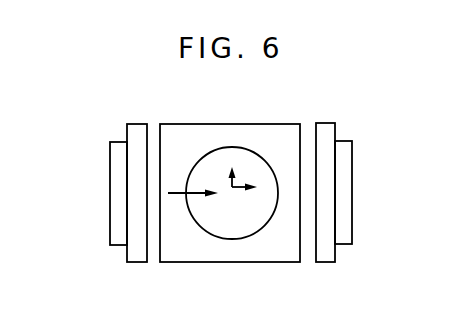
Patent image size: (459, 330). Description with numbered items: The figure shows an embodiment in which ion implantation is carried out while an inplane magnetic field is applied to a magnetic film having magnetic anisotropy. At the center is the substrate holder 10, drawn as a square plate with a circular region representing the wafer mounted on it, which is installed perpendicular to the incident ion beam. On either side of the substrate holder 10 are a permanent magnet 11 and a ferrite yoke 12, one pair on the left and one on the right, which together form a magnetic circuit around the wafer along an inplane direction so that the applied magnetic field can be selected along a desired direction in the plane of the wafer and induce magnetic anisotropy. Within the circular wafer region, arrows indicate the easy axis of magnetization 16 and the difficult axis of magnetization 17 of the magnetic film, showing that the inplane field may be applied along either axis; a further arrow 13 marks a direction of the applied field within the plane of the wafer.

The substrate holder 10 is at (247, 255).
The permanent magnet 11 is at (113, 185).
The ferrite yoke 12 is at (135, 130).
The first direction arrow 13 is at (193, 182).
The easy axis of magnetization 16 is at (231, 168).
The difficult axis of magnetization 17 is at (250, 179).